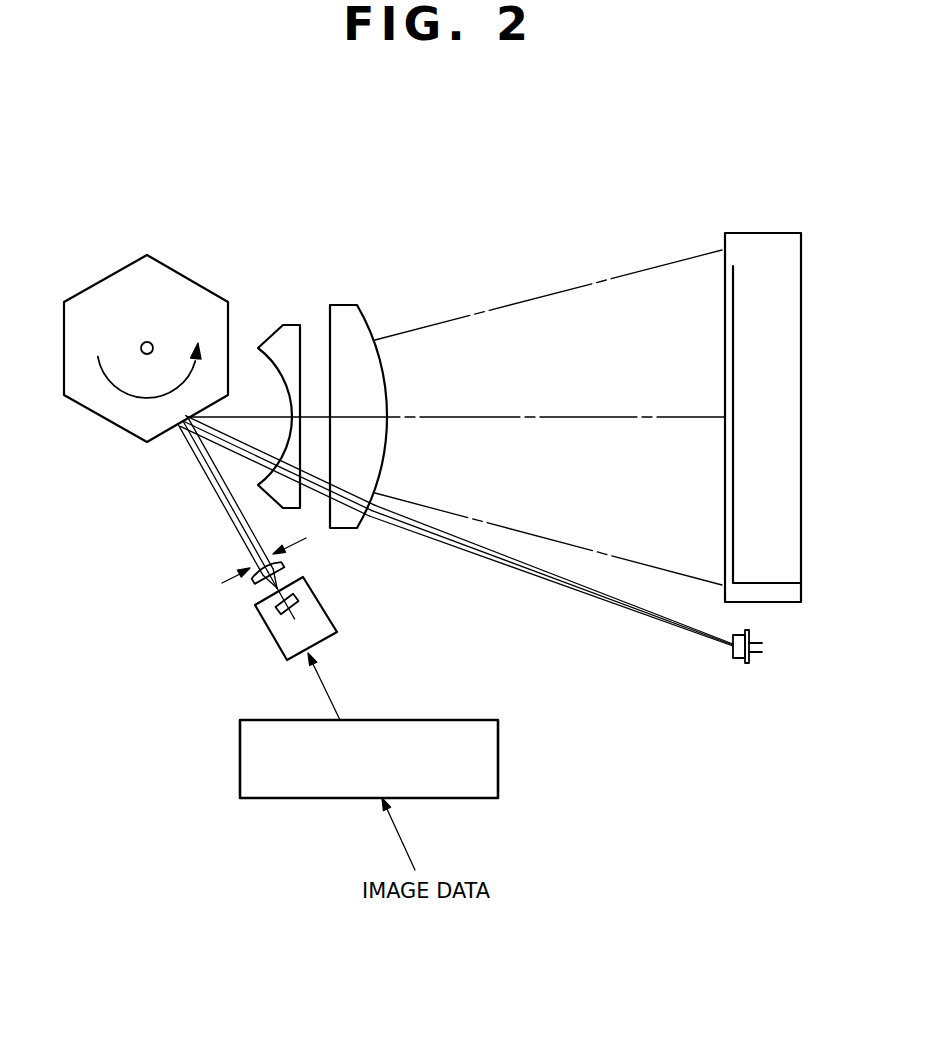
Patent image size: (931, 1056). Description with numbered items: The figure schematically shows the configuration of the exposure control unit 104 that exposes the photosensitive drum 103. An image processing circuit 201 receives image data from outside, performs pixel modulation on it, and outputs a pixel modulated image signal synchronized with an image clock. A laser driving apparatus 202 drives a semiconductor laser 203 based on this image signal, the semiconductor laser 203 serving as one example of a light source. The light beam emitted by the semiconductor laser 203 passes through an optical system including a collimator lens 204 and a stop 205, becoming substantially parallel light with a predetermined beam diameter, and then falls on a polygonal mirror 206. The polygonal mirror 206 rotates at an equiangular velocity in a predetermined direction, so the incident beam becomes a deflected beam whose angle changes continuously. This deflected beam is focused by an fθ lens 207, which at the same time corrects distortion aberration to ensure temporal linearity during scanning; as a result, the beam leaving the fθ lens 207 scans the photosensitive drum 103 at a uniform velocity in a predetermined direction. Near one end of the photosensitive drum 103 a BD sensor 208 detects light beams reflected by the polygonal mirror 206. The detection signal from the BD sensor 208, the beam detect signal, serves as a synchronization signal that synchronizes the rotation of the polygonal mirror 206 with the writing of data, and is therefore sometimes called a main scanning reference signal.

The exposure control unit 104 is at (393, 179).
The photosensitive drum 103 is at (763, 233).
The image processing circuit 201 is at (240, 755).
The laser driving apparatus 202 is at (320, 642).
The semiconductor laser 203 is at (299, 607).
The collimator lens 204 is at (253, 580).
The stop 205 is at (237, 573).
The polygonal mirror 206 is at (103, 278).
The fθ lens 207 is at (382, 298).
The BD sensor 208 is at (736, 659).